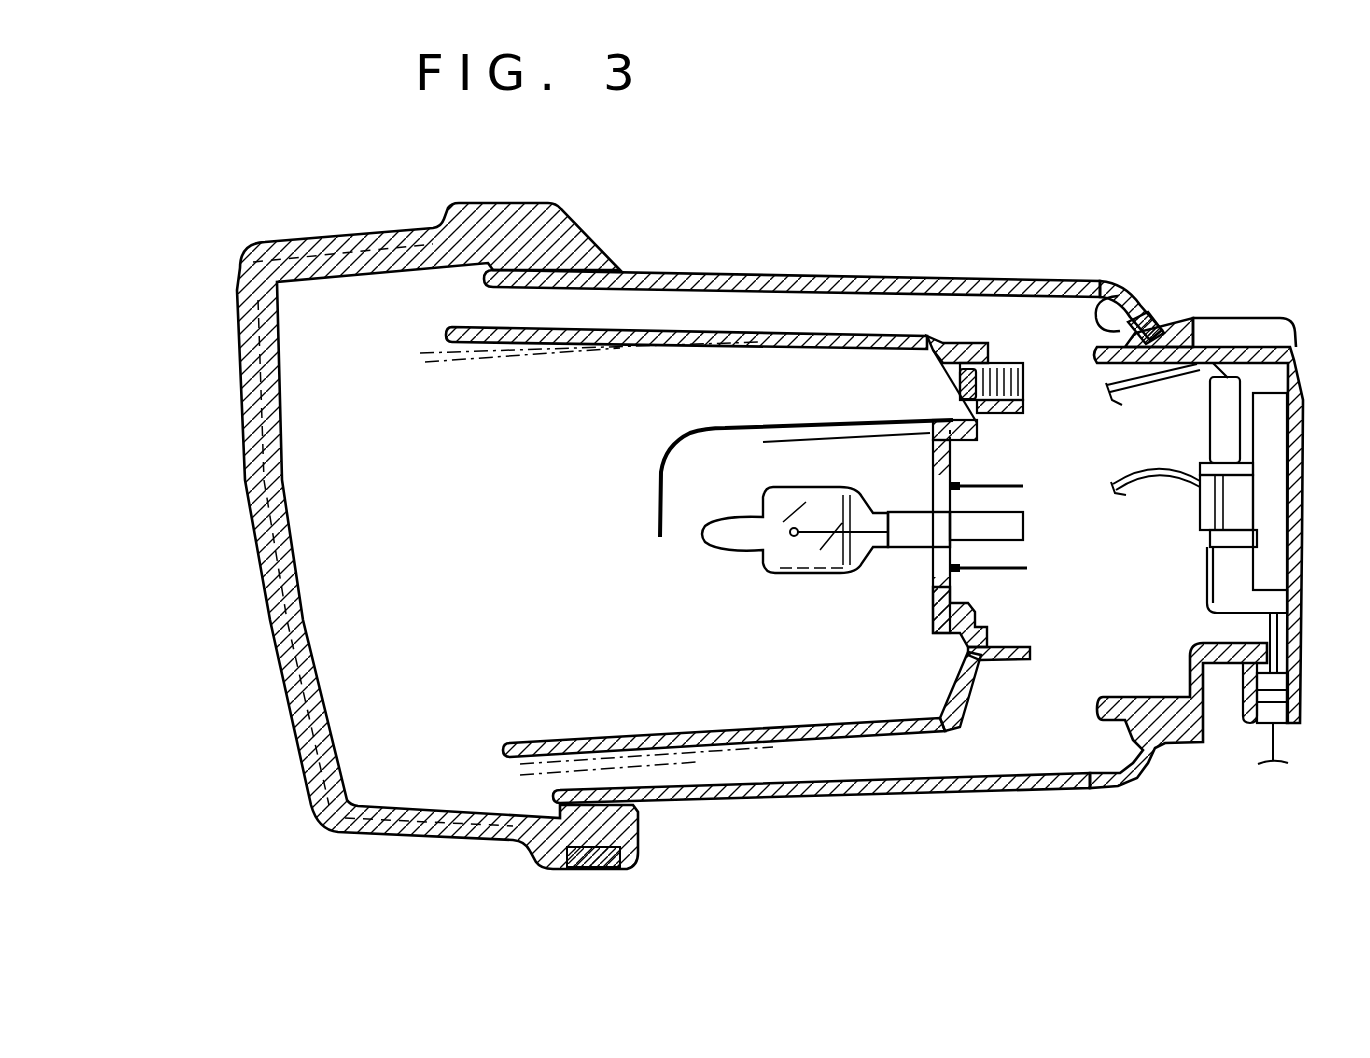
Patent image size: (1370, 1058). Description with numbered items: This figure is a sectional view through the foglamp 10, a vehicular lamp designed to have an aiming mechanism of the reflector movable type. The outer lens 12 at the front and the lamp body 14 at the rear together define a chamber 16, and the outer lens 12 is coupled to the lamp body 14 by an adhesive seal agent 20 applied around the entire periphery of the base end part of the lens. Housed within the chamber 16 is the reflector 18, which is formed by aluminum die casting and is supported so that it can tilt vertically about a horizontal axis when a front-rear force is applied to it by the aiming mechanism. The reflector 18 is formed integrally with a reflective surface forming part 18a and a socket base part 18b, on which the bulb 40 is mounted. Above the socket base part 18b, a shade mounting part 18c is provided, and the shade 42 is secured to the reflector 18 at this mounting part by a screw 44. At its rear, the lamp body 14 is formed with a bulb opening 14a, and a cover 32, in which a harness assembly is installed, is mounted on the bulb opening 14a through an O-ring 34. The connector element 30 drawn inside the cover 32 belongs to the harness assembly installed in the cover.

The foglamp 10 is at (1004, 215).
The outer lens 12 is at (289, 226).
The lamp body 14 is at (886, 491).
The bulb opening 14a is at (1110, 293).
The chamber 16 is at (492, 573).
The reflector 18 is at (744, 493).
The reflective surface forming part 18a is at (976, 698).
The socket base part 18b is at (933, 613).
The shade mounting part 18c is at (990, 357).
The adhesive seal agent 20 is at (612, 864).
The connector 30 is at (1210, 570).
The cover 32 is at (1304, 512).
The O-ring 34 is at (1160, 322).
The bulb 40 is at (786, 576).
The shade 42 is at (660, 490).
The screw 44 is at (960, 387).